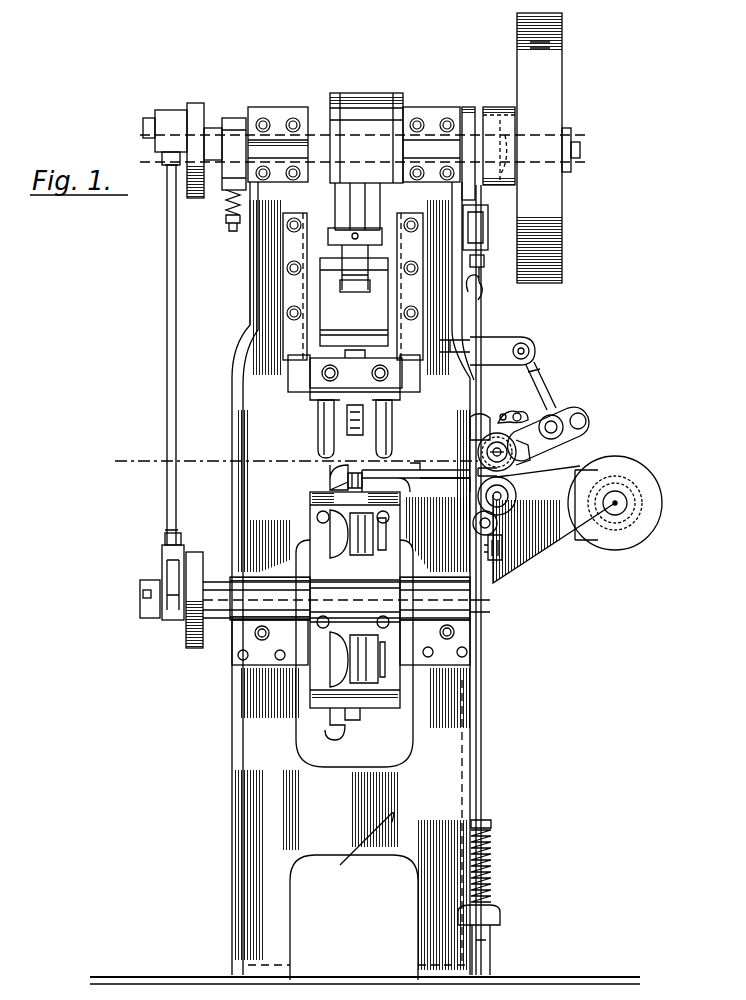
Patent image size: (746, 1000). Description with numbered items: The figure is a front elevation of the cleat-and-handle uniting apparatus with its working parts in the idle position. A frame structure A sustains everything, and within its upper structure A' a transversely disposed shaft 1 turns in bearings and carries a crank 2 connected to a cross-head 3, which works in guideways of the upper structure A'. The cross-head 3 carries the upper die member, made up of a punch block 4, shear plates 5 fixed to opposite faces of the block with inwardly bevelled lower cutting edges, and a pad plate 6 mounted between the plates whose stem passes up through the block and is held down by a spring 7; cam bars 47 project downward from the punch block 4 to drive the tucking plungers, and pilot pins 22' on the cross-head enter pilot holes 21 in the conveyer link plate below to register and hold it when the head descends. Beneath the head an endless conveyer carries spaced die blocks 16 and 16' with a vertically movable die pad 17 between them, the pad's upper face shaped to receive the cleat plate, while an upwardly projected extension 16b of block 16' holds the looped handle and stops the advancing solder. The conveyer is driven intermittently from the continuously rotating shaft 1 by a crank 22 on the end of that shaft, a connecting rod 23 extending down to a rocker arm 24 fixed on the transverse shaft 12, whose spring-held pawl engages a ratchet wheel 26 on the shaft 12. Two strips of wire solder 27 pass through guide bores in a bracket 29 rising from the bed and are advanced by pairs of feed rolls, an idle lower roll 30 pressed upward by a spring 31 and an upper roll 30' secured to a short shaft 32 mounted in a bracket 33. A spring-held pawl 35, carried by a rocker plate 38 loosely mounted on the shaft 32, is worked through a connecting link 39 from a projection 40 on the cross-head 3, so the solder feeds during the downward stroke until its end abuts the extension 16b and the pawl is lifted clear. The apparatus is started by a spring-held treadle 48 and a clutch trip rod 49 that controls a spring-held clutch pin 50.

The shaft 1 is at (216, 145).
The crank 2 is at (368, 115).
The cross-head 3 is at (372, 304).
The punch block 4 is at (330, 405).
The shear plates 5 is at (345, 412).
The pad plate 6 is at (350, 440).
The spring 7 is at (345, 425).
The transverse shaft 12 is at (143, 598).
The die block 16 is at (504, 616).
The die block 16' is at (271, 567).
The upwardly projected extension 16b is at (330, 476).
The die pad 17 is at (370, 660).
The pilot holes 21 is at (450, 623).
The crank 22 is at (187, 109).
The pilot pins 22' is at (278, 451).
The connecting rod 23 is at (167, 318).
The rocker arm 24 is at (172, 590).
The ratchet wheel 26 is at (190, 633).
The wire solder strips 27 is at (516, 492).
The bracket 29 is at (510, 507).
The lower feed roll 30 is at (633, 503).
The upper feed rolls 30' is at (590, 465).
The spring 31 is at (502, 585).
The shaft 32 is at (520, 470).
The bracket 33 is at (525, 458).
The pawl 35 is at (560, 440).
The rocker plate 38 is at (490, 422).
The connecting link 39 is at (470, 420).
The projection 40 is at (487, 344).
The cam bars 47 is at (405, 403).
The treadle 48 is at (500, 920).
The clutch trip rod 49 is at (481, 652).
The clutch pin 50 is at (513, 180).
The frame structure A is at (389, 583).
The upper structure A' is at (164, 262).